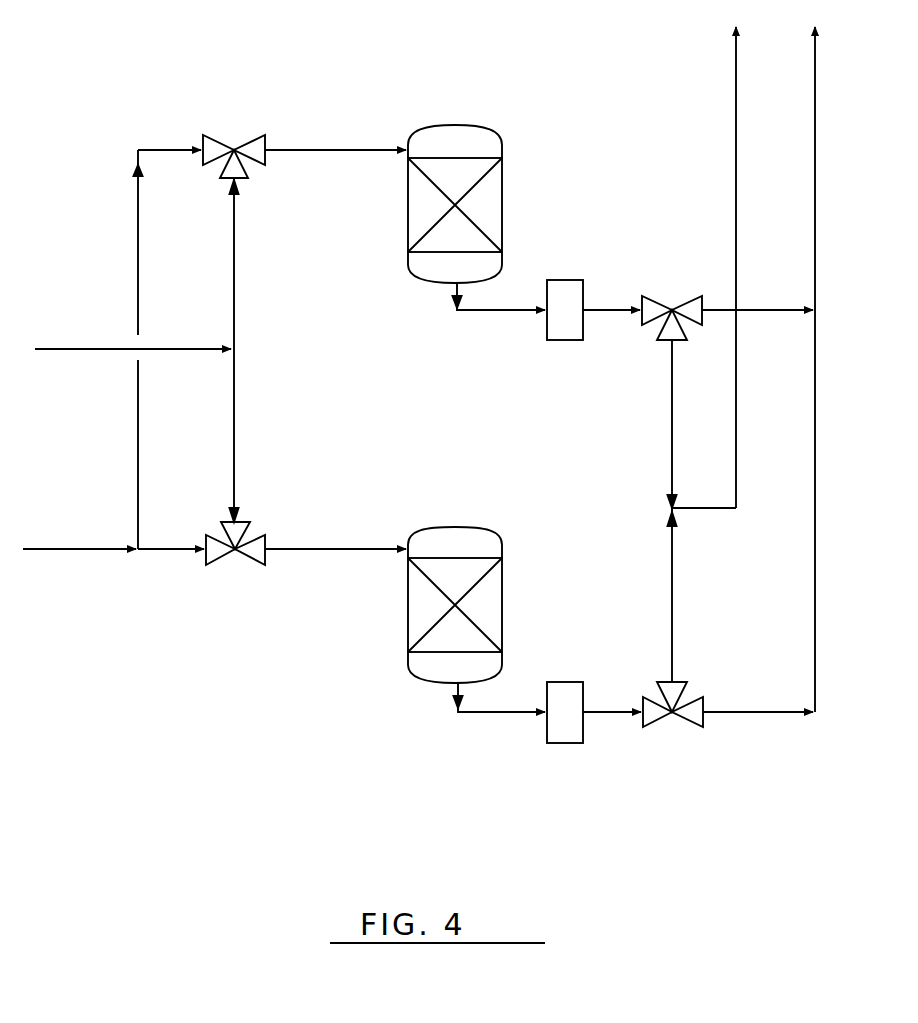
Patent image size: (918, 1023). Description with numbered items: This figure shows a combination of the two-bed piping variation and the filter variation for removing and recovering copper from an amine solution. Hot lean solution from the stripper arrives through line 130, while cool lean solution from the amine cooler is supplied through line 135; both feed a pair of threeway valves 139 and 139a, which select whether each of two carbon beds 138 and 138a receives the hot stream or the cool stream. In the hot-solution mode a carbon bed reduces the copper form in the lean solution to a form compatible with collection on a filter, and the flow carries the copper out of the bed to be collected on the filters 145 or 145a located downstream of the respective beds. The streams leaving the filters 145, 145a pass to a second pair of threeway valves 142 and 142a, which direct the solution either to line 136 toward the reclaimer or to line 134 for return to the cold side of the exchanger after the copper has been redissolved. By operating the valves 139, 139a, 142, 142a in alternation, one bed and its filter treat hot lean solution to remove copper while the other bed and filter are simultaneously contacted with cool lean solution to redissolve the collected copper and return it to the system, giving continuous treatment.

The line 130 is at (103, 348).
The line 134 is at (815, 220).
The line 135 is at (97, 549).
The outlet line 136 is at (735, 150).
The carbon bed 138 is at (488, 132).
The carbon bed 138a is at (502, 553).
The threeway valve 139 is at (232, 307).
The threeway valve 139a is at (266, 532).
The threeway valve 142 is at (698, 270).
The threeway valve 142a is at (685, 690).
The filter 145 is at (583, 285).
The filter 145a is at (563, 682).